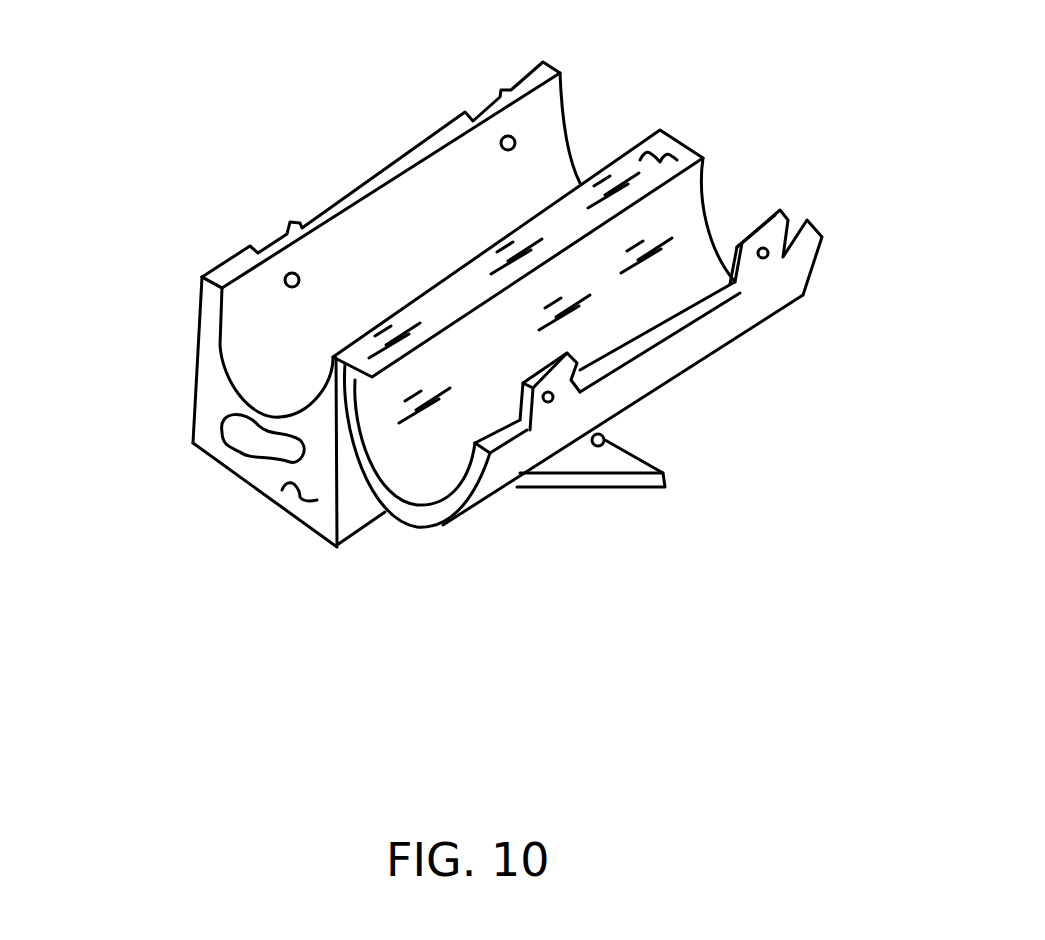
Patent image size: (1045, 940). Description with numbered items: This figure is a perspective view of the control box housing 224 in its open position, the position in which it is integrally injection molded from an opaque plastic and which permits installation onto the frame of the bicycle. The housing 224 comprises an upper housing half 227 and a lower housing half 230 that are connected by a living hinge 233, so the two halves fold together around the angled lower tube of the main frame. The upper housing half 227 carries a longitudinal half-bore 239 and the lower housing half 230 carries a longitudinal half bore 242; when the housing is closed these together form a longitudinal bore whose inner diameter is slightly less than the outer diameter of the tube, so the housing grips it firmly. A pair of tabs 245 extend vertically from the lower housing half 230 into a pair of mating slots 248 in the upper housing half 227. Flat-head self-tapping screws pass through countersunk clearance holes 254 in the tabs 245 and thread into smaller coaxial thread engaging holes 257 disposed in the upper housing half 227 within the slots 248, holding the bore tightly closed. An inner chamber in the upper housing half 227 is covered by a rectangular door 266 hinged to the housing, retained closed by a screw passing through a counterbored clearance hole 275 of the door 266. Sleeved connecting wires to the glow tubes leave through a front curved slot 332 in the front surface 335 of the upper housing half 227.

The housing 224 is at (219, 153).
The upper housing half 227 is at (238, 478).
The lower housing half 230 is at (710, 360).
The living hinge 233 is at (661, 152).
The longitudinal half-bore 239 is at (220, 348).
The longitudinal half bore 242 is at (413, 507).
The tabs 245 is at (578, 390).
The mating slots 248 is at (485, 105).
The countersunk clearance holes 254 is at (546, 403).
The thread engaging holes 257 is at (514, 139).
The rectangular door 266 is at (573, 490).
The counterbored clearance hole 275 is at (612, 440).
The front curved slot 332 is at (220, 433).
The front surface 335 is at (297, 504).